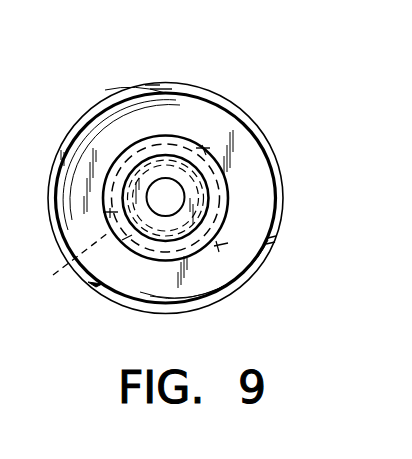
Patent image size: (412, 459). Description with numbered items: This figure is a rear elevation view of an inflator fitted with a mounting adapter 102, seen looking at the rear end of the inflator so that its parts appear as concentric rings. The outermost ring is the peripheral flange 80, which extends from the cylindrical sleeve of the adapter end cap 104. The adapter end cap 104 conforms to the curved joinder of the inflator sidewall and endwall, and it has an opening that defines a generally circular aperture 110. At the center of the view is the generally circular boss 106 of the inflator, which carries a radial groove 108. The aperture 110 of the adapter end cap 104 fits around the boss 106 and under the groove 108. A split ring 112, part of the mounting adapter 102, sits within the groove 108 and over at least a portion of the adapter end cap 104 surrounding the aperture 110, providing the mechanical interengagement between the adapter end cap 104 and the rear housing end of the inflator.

The mounting adapter 102 is at (284, 198).
The peripheral flange 80 is at (272, 243).
The adapter end cap 104 is at (237, 143).
The boss 106 is at (145, 160).
The radial groove 108 is at (64, 269).
The aperture 110 is at (202, 243).
The split ring 112 is at (192, 142).